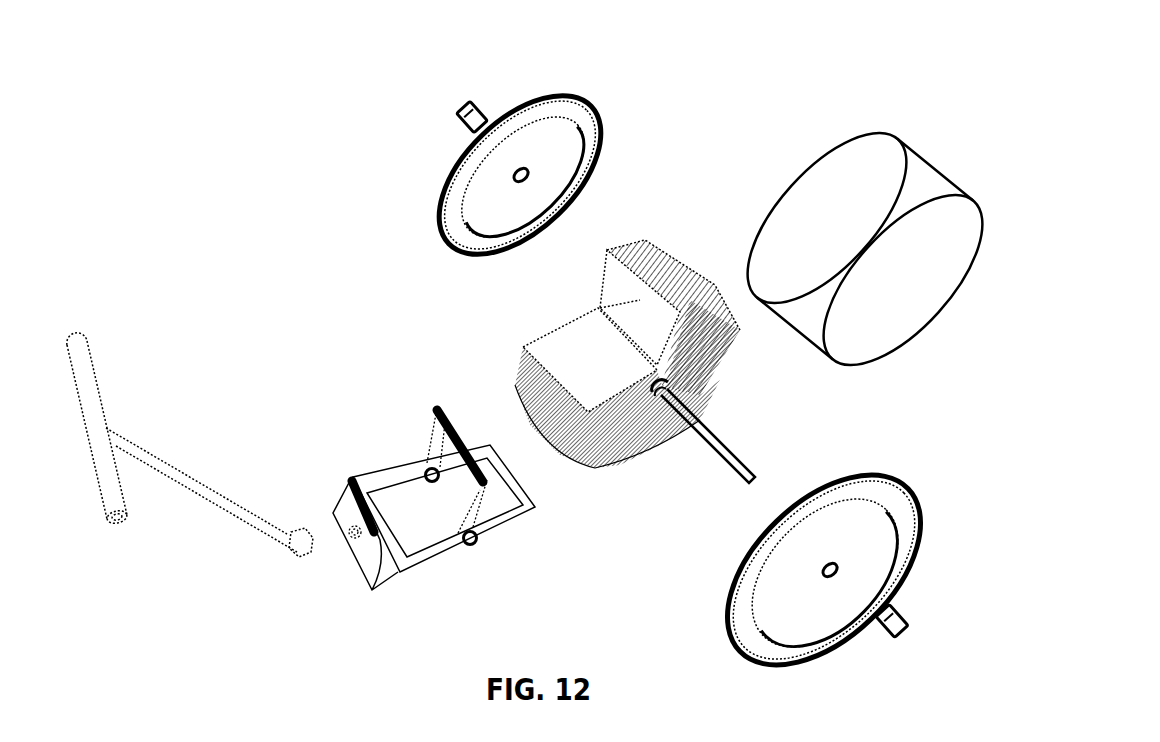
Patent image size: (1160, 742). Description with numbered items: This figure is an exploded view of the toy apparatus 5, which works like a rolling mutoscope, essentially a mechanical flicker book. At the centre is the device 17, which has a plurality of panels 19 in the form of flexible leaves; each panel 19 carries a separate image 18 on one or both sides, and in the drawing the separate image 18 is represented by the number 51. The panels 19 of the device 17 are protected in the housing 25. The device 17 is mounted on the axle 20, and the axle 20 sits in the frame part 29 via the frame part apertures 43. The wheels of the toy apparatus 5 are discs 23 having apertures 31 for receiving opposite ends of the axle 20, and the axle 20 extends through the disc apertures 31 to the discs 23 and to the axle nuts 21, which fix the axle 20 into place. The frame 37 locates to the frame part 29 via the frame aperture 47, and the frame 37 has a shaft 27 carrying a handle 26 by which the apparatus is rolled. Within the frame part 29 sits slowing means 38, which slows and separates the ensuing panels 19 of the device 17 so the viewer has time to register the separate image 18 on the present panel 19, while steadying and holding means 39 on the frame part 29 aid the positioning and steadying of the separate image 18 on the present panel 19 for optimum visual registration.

The toy apparatus 5 is at (299, 124).
The device 17 is at (284, 228).
The separate image 18 is at (613, 300).
The panels 19 is at (697, 285).
The axle 20 is at (735, 460).
The axle nuts 21 is at (460, 121).
The discs 23 is at (572, 143).
The housing 25 is at (883, 153).
The handle 26 is at (85, 372).
The shaft 27 is at (192, 485).
The frame part 29 is at (427, 558).
The apertures 31 is at (512, 178).
The frame 37 is at (293, 545).
The slowing means 38 is at (352, 507).
The steadying and holding means 39 is at (443, 423).
The frame part apertures 43 is at (432, 482).
The frame aperture 47 is at (352, 535).
The number fifty-one representing the separate image 51 is at (670, 302).